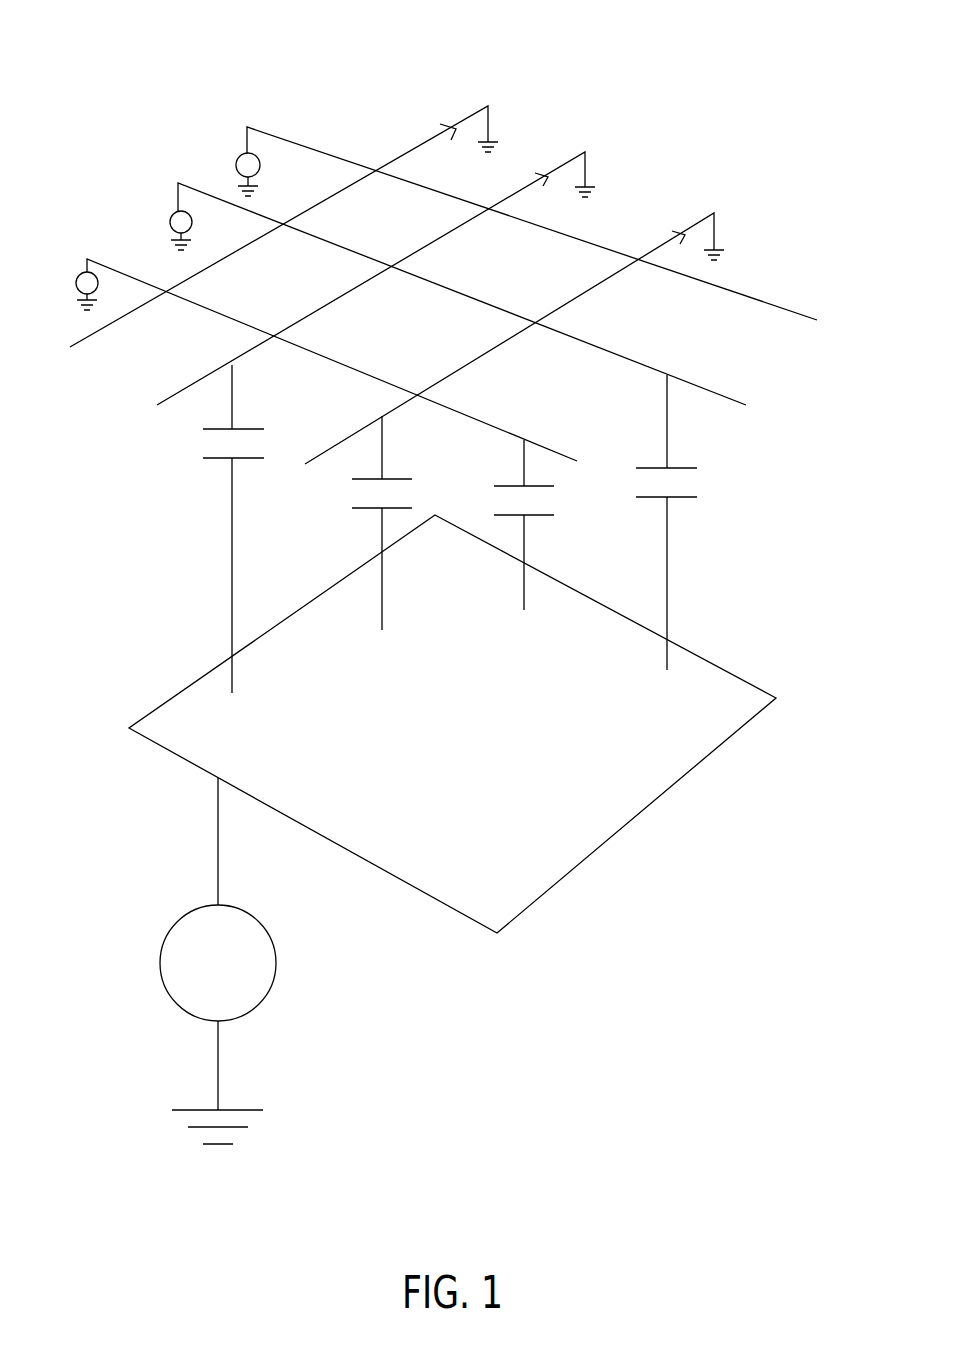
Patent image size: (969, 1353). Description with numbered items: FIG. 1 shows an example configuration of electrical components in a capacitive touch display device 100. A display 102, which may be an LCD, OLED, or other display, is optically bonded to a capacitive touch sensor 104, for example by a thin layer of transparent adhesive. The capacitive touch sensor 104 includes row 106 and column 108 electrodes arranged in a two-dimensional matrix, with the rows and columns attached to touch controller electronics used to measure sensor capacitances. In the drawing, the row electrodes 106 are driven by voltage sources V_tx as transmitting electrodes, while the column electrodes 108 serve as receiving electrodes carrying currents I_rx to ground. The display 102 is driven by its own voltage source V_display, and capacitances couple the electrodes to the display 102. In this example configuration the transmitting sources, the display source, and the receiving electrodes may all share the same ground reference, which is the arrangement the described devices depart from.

The capacitive touch display device 100 is at (88, 18).
The display 102 is at (727, 681).
The capacitive touch sensor 104 is at (582, 120).
The row electrodes 106 is at (276, 120).
The column electrodes 108 is at (706, 205).